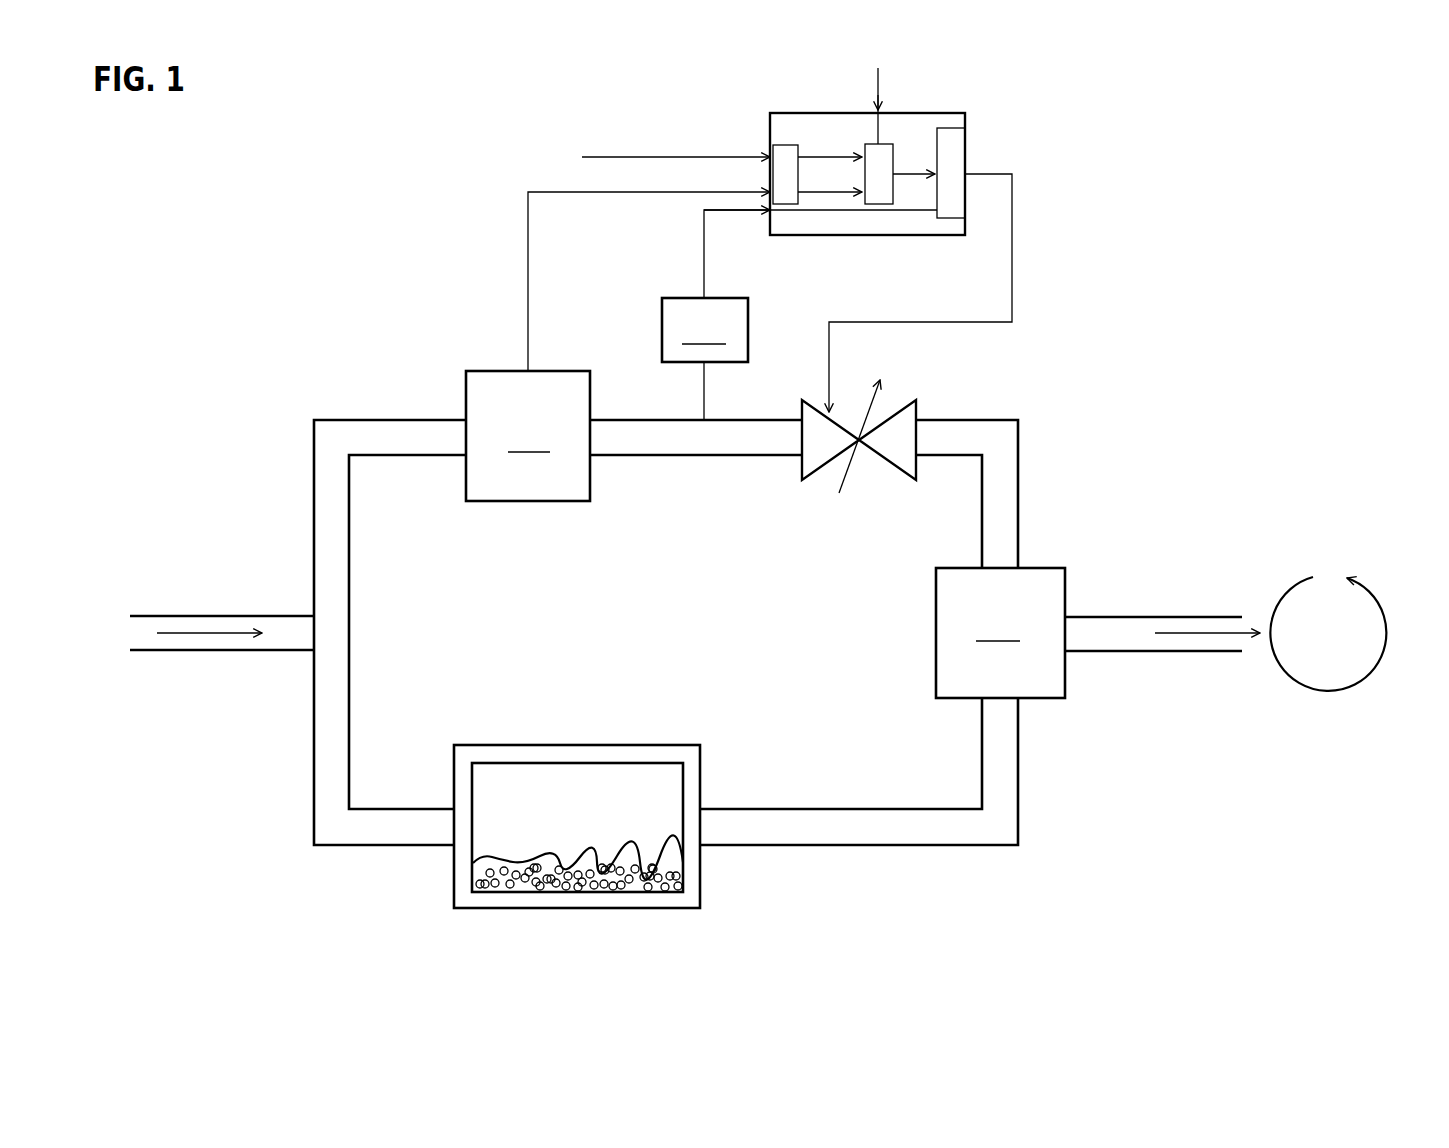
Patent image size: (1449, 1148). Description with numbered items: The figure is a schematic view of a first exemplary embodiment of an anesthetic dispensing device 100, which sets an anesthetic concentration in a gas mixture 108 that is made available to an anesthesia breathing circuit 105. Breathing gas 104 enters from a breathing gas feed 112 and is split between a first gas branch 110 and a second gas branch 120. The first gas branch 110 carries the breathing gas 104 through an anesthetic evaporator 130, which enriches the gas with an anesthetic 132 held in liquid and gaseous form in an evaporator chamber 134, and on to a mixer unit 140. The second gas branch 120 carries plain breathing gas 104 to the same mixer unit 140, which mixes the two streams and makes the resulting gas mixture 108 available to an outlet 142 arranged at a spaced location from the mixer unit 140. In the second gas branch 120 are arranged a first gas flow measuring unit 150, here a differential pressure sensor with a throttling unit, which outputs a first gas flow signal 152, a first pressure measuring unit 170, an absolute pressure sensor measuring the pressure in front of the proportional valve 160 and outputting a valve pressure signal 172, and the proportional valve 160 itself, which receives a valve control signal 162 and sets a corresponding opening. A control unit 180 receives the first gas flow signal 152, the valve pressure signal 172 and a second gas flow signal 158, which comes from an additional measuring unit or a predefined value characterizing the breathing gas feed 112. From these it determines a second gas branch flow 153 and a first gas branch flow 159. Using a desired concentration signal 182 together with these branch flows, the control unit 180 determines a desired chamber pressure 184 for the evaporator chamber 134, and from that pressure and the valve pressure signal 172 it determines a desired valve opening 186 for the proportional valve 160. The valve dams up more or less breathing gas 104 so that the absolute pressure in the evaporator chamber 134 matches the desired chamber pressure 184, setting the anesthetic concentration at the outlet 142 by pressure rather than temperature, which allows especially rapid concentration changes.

The anesthetic dispensing device 100 is at (1322, 181).
The breathing gas 104 is at (206, 631).
The anesthesia breathing circuit 105 is at (1376, 597).
The gas mixture 108 is at (1218, 616).
The first gas branch 110 is at (845, 831).
The breathing gas feed 112 is at (140, 653).
The second gas branch 120 is at (385, 437).
The anesthetic evaporator 130 is at (464, 891).
The anesthetic 132 is at (543, 890).
The evaporator chamber 134 is at (617, 838).
The mixer unit 140 is at (1000, 633).
The outlet 142 is at (1238, 654).
The first gas flow measuring unit 150 is at (528, 436).
The first gas flow signal 152 is at (527, 237).
The second gas branch flow 153 is at (827, 190).
The second gas flow signal 158 is at (673, 156).
The first gas branch flow 159 is at (837, 156).
The proportional valve 160 is at (823, 463).
The valve control signal 162 is at (1013, 290).
The first pressure measuring unit 170 is at (705, 359).
The valve pressure signal 172 is at (702, 236).
The control unit 180 is at (890, 112).
The desired concentration signal 182 is at (877, 105).
The desired chamber pressure 184 is at (908, 170).
The desired valve opening 186 is at (1020, 225).